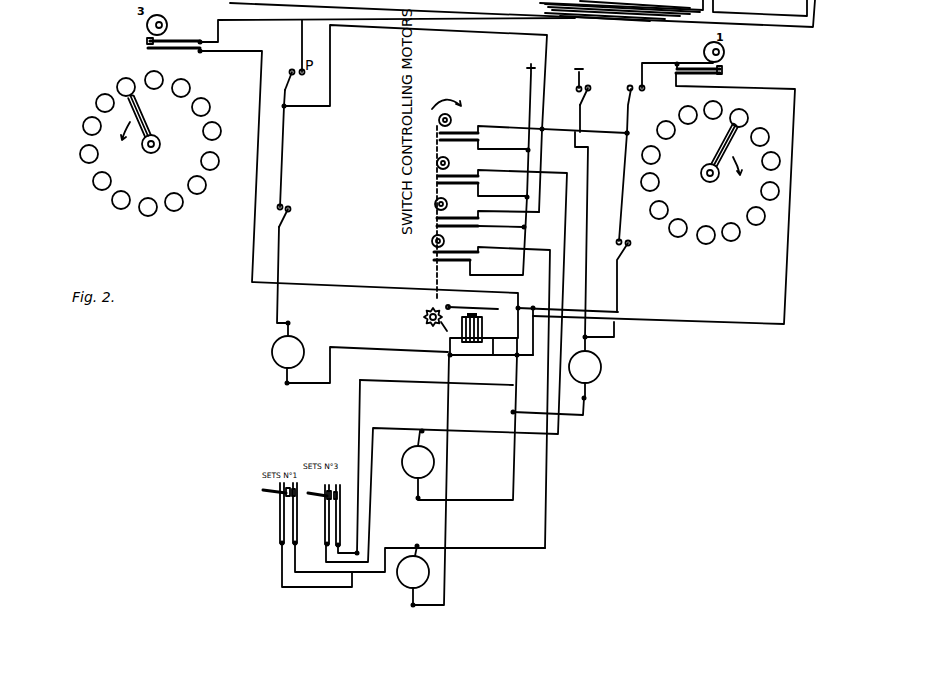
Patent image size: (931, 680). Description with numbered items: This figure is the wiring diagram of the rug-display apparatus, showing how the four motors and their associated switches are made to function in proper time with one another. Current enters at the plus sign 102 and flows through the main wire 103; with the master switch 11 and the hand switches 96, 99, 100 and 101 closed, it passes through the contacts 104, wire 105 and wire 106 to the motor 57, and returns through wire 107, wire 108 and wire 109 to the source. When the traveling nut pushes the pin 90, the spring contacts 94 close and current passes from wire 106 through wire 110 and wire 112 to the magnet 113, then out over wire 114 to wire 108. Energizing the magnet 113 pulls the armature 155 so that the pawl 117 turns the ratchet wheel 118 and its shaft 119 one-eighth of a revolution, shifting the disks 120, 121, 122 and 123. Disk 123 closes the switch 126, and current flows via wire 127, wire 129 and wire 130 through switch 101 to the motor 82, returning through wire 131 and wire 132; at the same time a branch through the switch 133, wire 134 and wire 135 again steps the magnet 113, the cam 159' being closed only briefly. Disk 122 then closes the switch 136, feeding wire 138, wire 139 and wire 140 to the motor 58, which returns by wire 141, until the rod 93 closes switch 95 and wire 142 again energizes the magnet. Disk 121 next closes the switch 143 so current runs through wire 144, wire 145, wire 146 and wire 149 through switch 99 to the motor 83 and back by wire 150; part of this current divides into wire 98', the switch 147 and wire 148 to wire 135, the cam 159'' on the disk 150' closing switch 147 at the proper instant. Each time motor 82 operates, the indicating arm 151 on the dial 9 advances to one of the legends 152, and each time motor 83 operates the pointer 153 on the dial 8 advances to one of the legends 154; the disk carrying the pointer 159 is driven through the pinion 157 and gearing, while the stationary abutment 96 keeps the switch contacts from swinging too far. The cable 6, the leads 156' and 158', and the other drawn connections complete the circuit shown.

The cable 6 is at (580, 2).
The dial 8 is at (134, 216).
The dial 9 is at (727, 248).
The master switch 11 is at (590, 100).
The motor 57 is at (404, 584).
The motor 58 is at (409, 472).
The motor 82 is at (598, 362).
The motor 83 is at (300, 344).
The pin 90 is at (262, 491).
The rod 93 is at (326, 502).
The spring contacts 94 is at (279, 507).
The switch structures 95 is at (327, 520).
The stationary abutment 96 is at (292, 55).
The wire 98' is at (387, 24).
The hand switch 99 is at (284, 226).
The hand switch 100 is at (631, 98).
The hand switch 101 is at (630, 264).
The plus sign 102 is at (531, 63).
The wire 103 is at (529, 105).
The contacts 104 is at (435, 257).
The wire 105 is at (552, 244).
The wire 106 is at (414, 553).
The wire 107 is at (446, 523).
The wire 108 is at (483, 357).
The wire 109 is at (533, 356).
The wire 110 is at (398, 538).
The wire 112 is at (359, 405).
The magnet 113 is at (483, 325).
The wire 114 is at (452, 343).
The pawl 117 is at (449, 330).
The ratchet wheel 118 is at (426, 319).
The shaft 119 is at (426, 313).
The disk 120 is at (446, 242).
The disk 121 is at (449, 205).
The disk 122 is at (450, 162).
The disk 123 is at (450, 106).
The switch 126 is at (440, 135).
The wire 127 is at (554, 137).
The wire 129 is at (603, 128).
The wire 130 is at (620, 202).
The wire 131 is at (579, 418).
The wire 132 is at (512, 387).
The switch 133 is at (724, 70).
The wire 134 is at (798, 178).
The wire 135 is at (529, 335).
The switch 136 is at (438, 182).
The wire 138 is at (446, 359).
The wire 139 is at (580, 260).
The wire 140 is at (417, 444).
The wire 141 is at (513, 488).
The wire 142 is at (375, 432).
The switch 143 is at (437, 225).
The wire 144 is at (500, 232).
The wire 145 is at (508, 206).
The wire 146 is at (331, 87).
The switch 147 is at (148, 43).
The wire 148 is at (261, 97).
The wire 149 is at (283, 160).
The wire 150 is at (367, 378).
The disk 150' is at (165, 7).
The indicating arm 151 is at (736, 180).
The legends 152 is at (781, 159).
The pointer 153 is at (144, 150).
The legends 154 is at (117, 87).
The armature 155 is at (476, 309).
The switch lead 156' is at (189, 17).
The pinion 157 is at (502, 188).
The switch lead 158' is at (691, 37).
The pointer 159 is at (686, 52).
The cam 159' is at (764, 46).
The cam 159'' is at (126, 25).